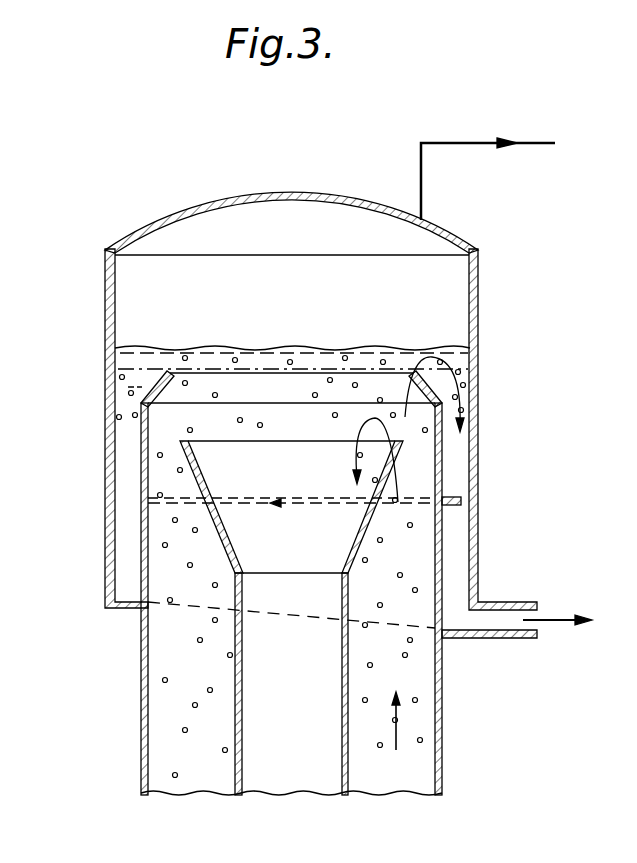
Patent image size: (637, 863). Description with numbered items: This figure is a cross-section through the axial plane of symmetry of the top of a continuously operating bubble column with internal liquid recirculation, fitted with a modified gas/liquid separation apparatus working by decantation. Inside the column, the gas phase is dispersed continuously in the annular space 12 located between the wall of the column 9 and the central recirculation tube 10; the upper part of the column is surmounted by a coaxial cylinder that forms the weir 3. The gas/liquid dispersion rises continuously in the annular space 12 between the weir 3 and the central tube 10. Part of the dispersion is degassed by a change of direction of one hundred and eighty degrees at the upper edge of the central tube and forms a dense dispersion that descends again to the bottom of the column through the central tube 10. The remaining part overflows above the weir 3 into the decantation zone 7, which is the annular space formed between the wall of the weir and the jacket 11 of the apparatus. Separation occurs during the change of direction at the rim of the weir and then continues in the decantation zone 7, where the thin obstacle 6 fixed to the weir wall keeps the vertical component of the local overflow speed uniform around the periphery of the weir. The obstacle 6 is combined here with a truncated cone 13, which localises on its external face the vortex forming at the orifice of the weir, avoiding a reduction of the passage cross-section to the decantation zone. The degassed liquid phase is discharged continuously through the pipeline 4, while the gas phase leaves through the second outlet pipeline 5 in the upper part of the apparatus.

The weir 3 is at (143, 513).
The first outlet pipeline 4 is at (518, 620).
The second outlet pipeline 5 is at (500, 173).
The thin obstacle 6 is at (461, 497).
The decantation zone 7 is at (123, 455).
The wall of the column 9 is at (142, 705).
The central recirculation tube 10 is at (237, 745).
The jacket 11 is at (110, 412).
The annular space 12 is at (178, 665).
The truncated cone 13 is at (155, 383).